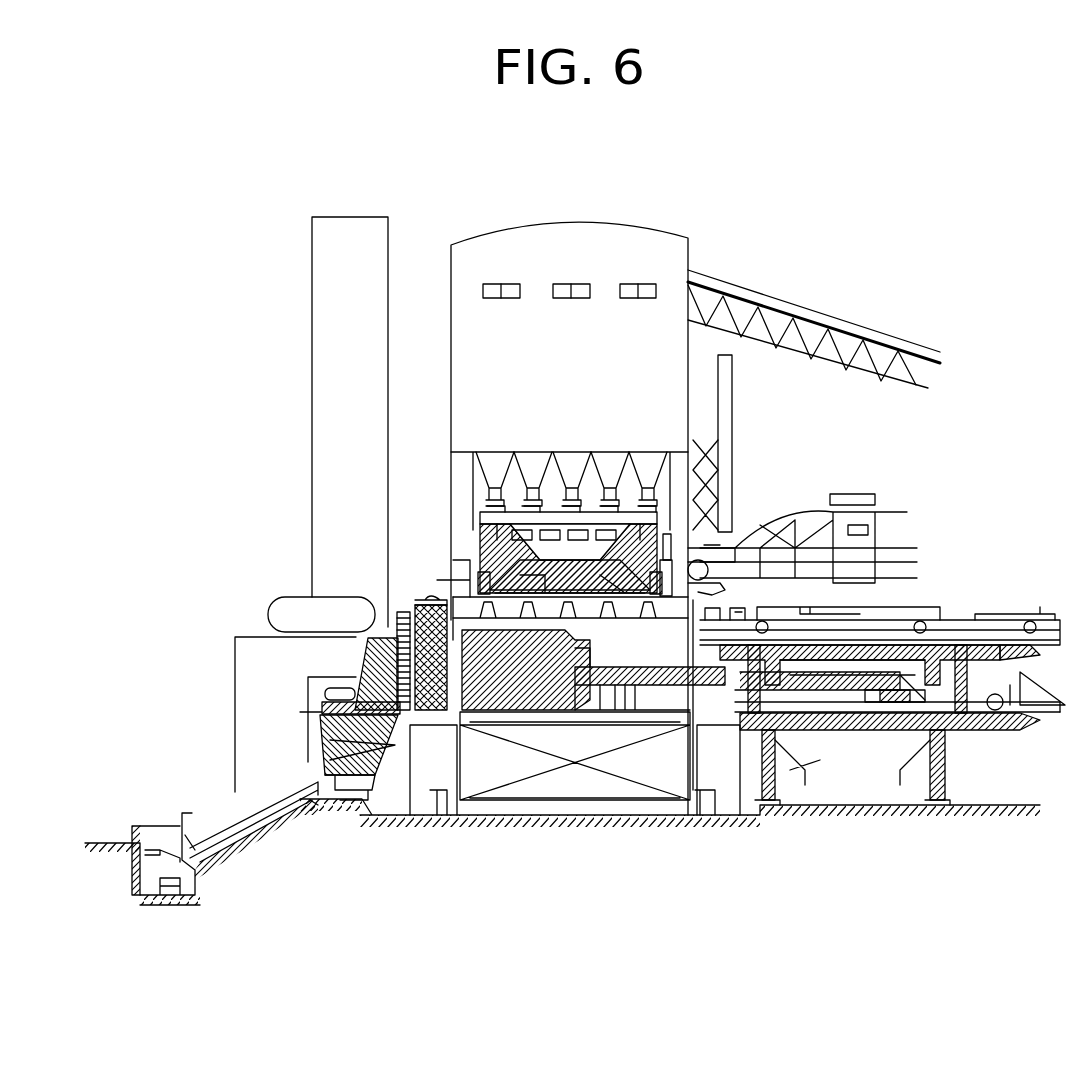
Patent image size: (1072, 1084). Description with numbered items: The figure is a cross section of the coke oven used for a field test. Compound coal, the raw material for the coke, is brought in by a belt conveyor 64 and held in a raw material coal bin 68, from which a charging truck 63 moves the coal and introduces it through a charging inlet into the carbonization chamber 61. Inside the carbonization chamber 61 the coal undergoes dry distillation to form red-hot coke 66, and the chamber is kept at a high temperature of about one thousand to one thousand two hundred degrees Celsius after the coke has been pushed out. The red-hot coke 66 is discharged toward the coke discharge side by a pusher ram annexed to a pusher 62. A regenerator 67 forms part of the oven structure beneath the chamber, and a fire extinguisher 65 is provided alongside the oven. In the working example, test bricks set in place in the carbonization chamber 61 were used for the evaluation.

The carbonization chamber 61 is at (665, 650).
The pusher 62 is at (935, 625).
The charging truck 63 is at (480, 530).
The belt conveyor 64 is at (863, 330).
The fire extinguisher 65 is at (345, 270).
The coke 66 is at (515, 690).
The regenerator 67 is at (585, 780).
The raw material coal bin 68 is at (600, 318).